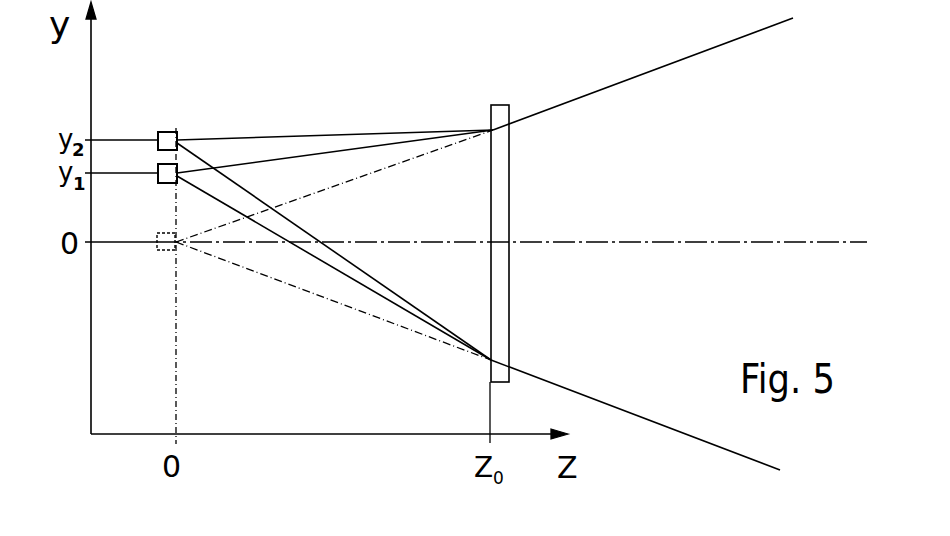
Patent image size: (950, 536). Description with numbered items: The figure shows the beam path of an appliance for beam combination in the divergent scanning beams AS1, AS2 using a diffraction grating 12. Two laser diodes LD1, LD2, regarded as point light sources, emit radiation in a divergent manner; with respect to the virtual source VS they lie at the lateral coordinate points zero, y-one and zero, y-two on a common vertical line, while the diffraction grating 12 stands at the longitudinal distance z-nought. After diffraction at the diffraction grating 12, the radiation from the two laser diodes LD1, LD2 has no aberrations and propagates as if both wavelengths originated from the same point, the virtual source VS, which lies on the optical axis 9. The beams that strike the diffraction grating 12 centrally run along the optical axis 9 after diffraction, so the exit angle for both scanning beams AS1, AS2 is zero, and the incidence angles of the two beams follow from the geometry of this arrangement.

The optical axis 9 is at (595, 243).
The diffraction grating 12 is at (506, 105).
The laser diode LD1 is at (170, 183).
The laser diode LD2 is at (167, 132).
The virtual source VS is at (173, 250).
The scanning beam AS1 is at (205, 181).
The scanning beam AS2 is at (233, 151).